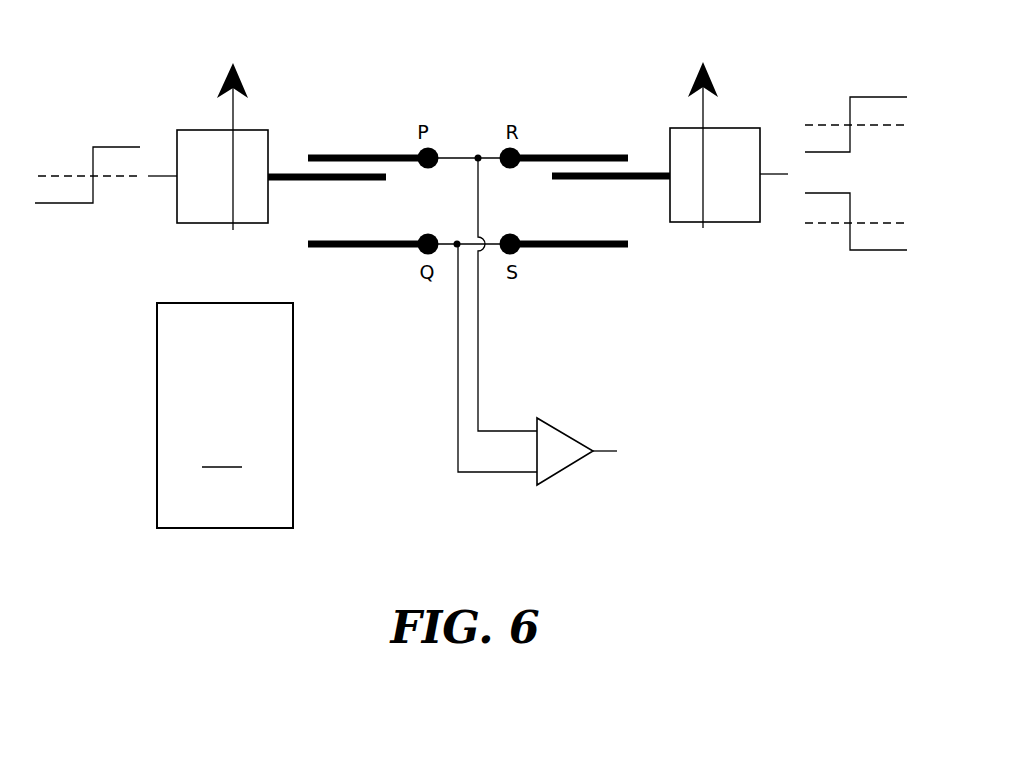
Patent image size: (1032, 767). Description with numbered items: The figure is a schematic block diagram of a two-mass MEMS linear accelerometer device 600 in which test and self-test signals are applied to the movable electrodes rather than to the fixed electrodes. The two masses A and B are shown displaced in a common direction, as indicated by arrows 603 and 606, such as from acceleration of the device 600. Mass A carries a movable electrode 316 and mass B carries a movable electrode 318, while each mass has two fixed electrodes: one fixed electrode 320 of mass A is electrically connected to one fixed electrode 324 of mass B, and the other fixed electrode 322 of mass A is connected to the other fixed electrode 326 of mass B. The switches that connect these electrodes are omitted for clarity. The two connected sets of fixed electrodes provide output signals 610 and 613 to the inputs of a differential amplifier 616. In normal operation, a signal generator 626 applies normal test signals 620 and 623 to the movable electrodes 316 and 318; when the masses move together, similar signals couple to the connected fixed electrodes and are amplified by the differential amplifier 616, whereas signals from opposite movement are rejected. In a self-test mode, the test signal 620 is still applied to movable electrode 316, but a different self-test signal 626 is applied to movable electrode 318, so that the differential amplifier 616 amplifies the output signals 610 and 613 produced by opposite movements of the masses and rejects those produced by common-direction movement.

The two-mass MEMS linear accelerometer device 600 is at (415, 47).
The arrow 603 is at (233, 103).
The arrow 606 is at (703, 101).
The output signal 610 is at (458, 350).
The output signal 613 is at (480, 350).
The differential amplifier 616 is at (571, 428).
The normal test signal 620 is at (118, 147).
The normal test signal 623 is at (872, 95).
The signal generator 626 is at (862, 252).
The movable electrode 316 is at (302, 181).
The movable electrode 318 is at (635, 180).
The fixed electrode 320 is at (358, 154).
The fixed electrode 322 is at (390, 251).
The fixed electrode 324 is at (578, 153).
The fixed electrode 326 is at (547, 252).